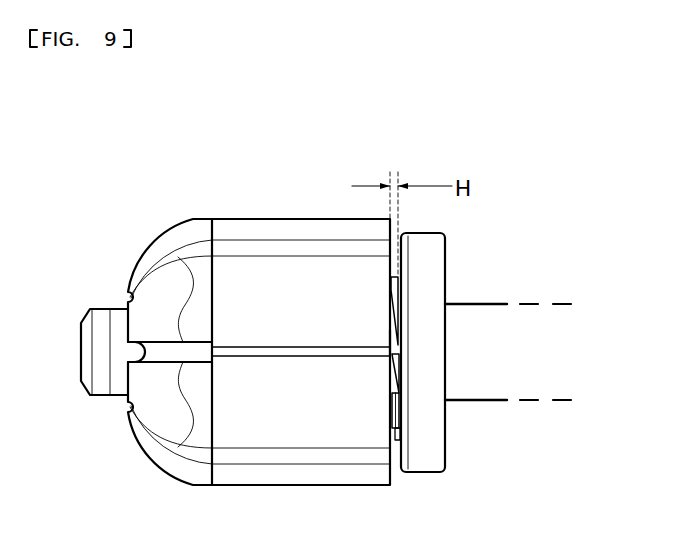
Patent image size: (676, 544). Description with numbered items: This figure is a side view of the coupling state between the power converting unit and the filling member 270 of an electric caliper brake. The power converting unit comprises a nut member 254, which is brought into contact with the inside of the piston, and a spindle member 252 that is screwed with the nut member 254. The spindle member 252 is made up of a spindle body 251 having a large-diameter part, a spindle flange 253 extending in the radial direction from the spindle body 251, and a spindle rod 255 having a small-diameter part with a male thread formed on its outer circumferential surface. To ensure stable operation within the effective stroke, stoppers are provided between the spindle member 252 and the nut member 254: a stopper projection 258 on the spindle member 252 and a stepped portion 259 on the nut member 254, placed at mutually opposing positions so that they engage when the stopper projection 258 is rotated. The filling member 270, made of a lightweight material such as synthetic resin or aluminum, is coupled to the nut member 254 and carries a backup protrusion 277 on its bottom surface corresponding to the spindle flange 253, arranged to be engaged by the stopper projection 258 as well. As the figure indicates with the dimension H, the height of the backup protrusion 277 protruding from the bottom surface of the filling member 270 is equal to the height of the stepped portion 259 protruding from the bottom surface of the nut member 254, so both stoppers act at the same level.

The spindle body 251 is at (484, 392).
The spindle member 252 is at (100, 292).
The spindle flange 253 is at (437, 257).
The nut member 254 is at (175, 215).
The spindle rod 255 is at (100, 382).
The stopper projection 258 is at (393, 434).
The stepped portion 259 is at (399, 277).
The filling member 270 is at (255, 210).
The backup protrusion 277 is at (395, 347).